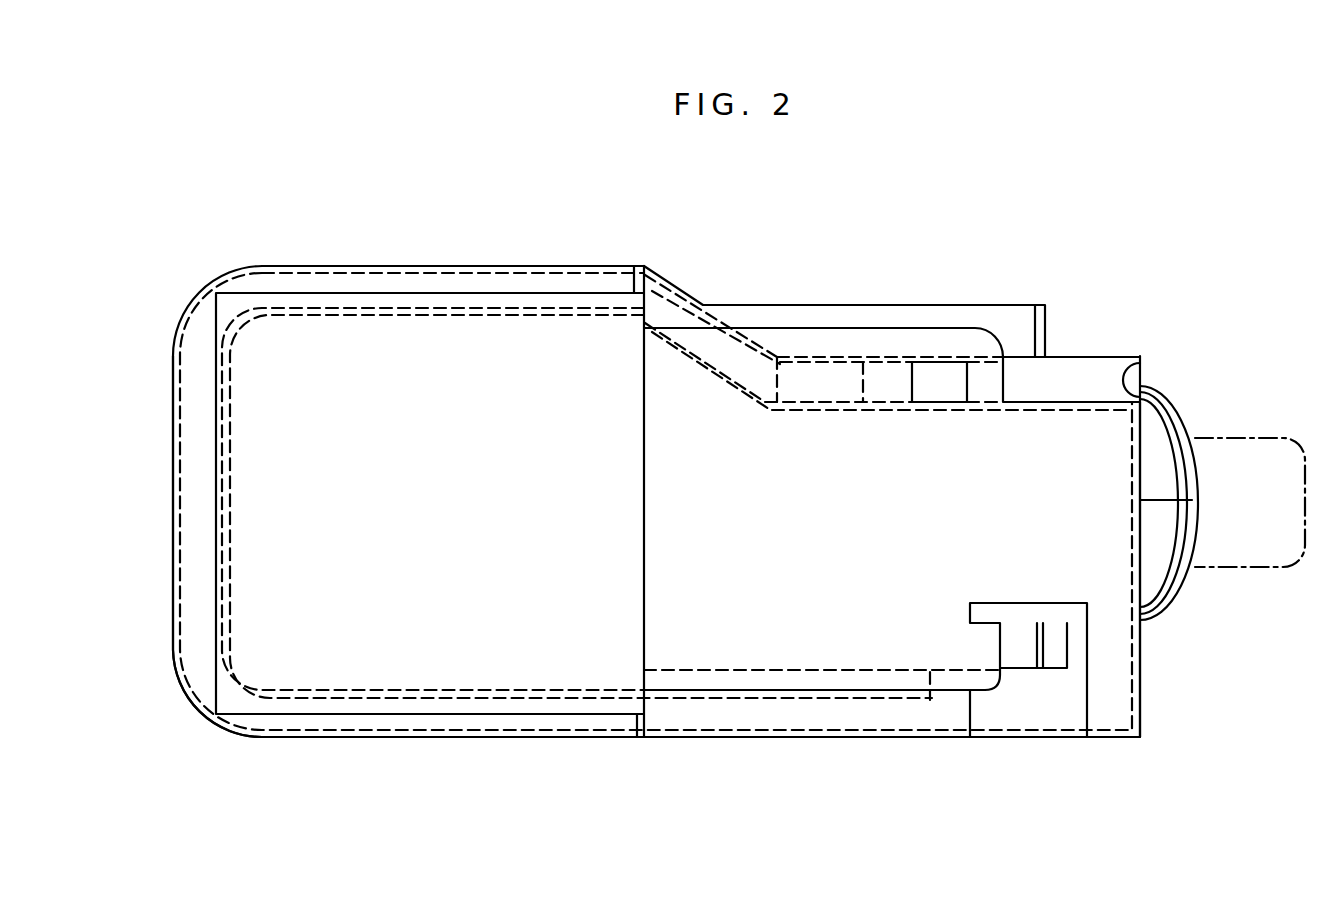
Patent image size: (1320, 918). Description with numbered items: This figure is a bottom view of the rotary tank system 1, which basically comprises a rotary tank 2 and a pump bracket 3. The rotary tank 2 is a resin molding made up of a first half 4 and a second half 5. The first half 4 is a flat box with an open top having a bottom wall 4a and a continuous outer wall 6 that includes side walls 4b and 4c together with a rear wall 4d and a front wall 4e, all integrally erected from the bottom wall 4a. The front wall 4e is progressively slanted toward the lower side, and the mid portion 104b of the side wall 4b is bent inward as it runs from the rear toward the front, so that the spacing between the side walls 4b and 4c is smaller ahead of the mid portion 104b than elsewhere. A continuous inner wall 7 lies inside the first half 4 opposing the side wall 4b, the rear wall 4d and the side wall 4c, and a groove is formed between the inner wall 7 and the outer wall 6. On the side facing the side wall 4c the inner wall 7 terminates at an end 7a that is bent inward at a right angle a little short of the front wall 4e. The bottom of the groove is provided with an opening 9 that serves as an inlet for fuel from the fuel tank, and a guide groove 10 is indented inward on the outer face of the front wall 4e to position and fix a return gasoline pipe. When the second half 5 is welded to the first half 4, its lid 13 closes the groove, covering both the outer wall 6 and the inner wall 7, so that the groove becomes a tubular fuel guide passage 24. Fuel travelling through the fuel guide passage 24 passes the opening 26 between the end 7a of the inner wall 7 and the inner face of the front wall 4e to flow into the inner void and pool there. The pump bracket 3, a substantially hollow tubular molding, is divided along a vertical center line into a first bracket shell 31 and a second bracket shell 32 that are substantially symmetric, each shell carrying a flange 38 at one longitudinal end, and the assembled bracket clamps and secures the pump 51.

The rotary tank system 1 is at (278, 240).
The rotary tank 2 is at (712, 742).
The pump bracket 3 is at (1192, 406).
The first half 4 is at (390, 672).
The bottom wall 4a is at (504, 672).
The side wall 4b is at (452, 262).
The side wall 4c is at (318, 742).
The rear wall 4d is at (170, 548).
The front wall 4e is at (1150, 716).
The second half 5 is at (1148, 688).
The outer wall 6 is at (530, 272).
The inner wall 7 is at (358, 266).
The end of inner wall 7a is at (940, 690).
The opening 9 is at (935, 378).
The guide groove 10 is at (1088, 378).
The lid 13 is at (193, 470).
The fuel guide passage 24 is at (203, 664).
The opening 26 is at (987, 678).
The first bracket shell 31 is at (1165, 580).
The second bracket shell 32 is at (1157, 458).
The flange 38 is at (1160, 388).
The pump 51 is at (1188, 580).
The mid portion of side wall 104b is at (683, 294).